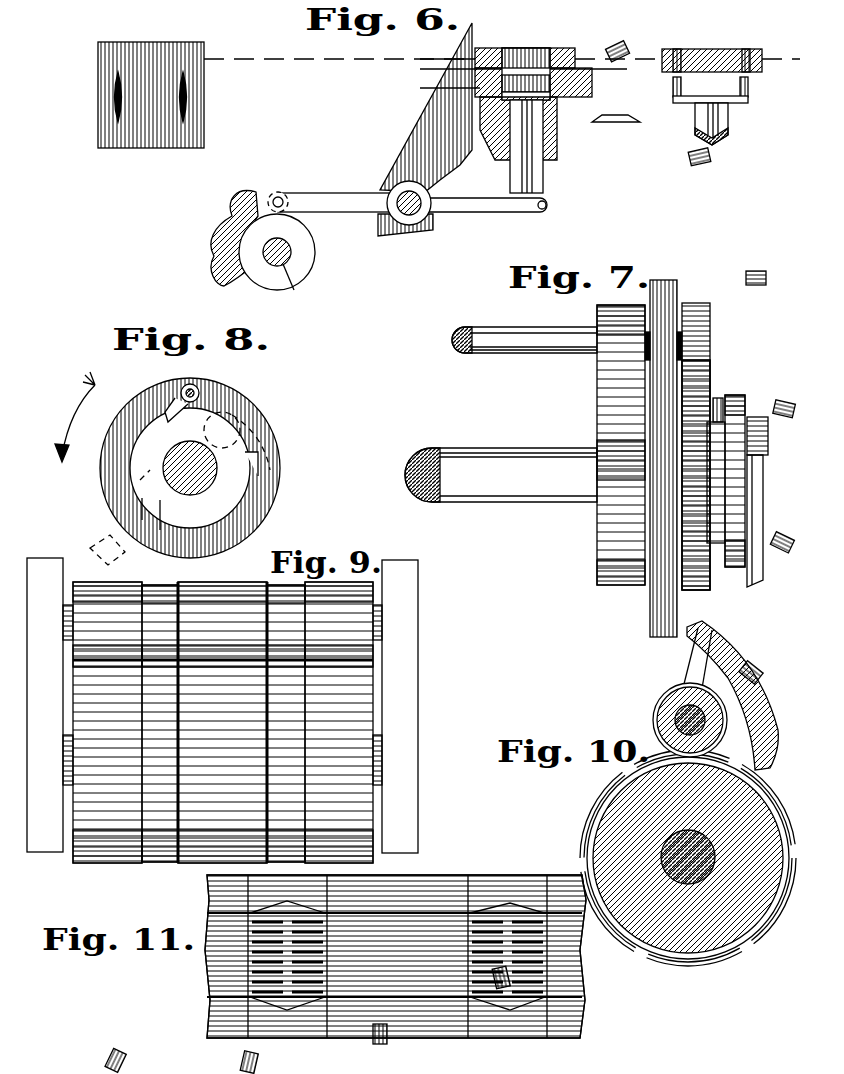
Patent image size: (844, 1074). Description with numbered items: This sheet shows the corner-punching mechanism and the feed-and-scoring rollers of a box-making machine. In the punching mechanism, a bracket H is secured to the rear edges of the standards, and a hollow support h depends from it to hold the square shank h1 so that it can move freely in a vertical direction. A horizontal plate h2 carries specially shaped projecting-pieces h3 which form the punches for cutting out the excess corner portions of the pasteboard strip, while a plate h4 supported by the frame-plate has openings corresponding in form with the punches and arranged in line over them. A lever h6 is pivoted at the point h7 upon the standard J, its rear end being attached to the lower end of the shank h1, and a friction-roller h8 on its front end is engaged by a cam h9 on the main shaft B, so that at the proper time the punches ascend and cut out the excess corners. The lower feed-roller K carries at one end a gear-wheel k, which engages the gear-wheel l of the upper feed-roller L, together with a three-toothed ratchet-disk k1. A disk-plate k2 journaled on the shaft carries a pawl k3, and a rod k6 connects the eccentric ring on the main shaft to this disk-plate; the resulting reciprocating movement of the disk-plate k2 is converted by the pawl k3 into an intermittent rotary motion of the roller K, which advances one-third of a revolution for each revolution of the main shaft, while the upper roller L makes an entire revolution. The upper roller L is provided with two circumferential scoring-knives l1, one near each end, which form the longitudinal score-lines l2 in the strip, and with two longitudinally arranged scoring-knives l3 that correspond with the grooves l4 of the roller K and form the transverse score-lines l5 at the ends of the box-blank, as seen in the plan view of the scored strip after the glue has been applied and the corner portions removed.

In FIG. 6, the hollow support h is at (557, 150).
In FIG. 6, the square shank h1 is at (543, 185).
In FIG. 6, the horizontal plate h2 is at (550, 100).
In FIG. 6, the projecting-pieces h3 is at (592, 93).
In FIG. 6, the plate h4 is at (205, 112).
In FIG. 6, the lever h6 is at (318, 214).
In FIG. 6, the pivot point h7 is at (392, 196).
In FIG. 6, the friction-roller h8 is at (280, 186).
In FIG. 6, the cam h9 is at (300, 278).
In FIG. 6, the bracket H is at (506, 80).
In FIG. 6, the standard J is at (462, 168).
In FIG. 6, the main shaft B is at (277, 266).
In FIG. 7, the lower feed-roller K is at (605, 595).
In FIG. 9, the lower feed-roller K is at (98, 863).
In FIG. 10, the lower feed-roller K is at (684, 960).
In FIG. 7, the upper feed-roller L is at (597, 330).
In FIG. 9, the upper feed-roller L is at (90, 582).
In FIG. 10, the upper feed-roller L is at (722, 722).
In FIG. 7, the gear-wheel l is at (708, 312).
In FIG. 7, the gear-wheel k is at (700, 592).
In FIG. 7, the ratchet-disk k1 is at (715, 545).
In FIG. 8, the ratchet-disk k1 is at (248, 488).
In FIG. 7, the disk-plate k2 is at (742, 402).
In FIG. 8, the disk-plate k2 is at (242, 410).
In FIG. 7, the pawl k3 is at (718, 400).
In FIG. 8, the pawl k3 is at (165, 398).
In FIG. 7, the rod k6 is at (760, 562).
In FIG. 9, the scoring-knives l1 is at (178, 660).
In FIG. 10, the scoring-knives l1 is at (652, 715).
In FIG. 11, the longitudinal score-lines l2 is at (365, 908).
In FIG. 10, the scoring-knives l3 is at (700, 650).
In FIG. 9, the grooves l4 is at (183, 705).
In FIG. 10, the grooves l4 is at (713, 770).
In FIG. 11, the transverse score-lines l5 is at (322, 1040).